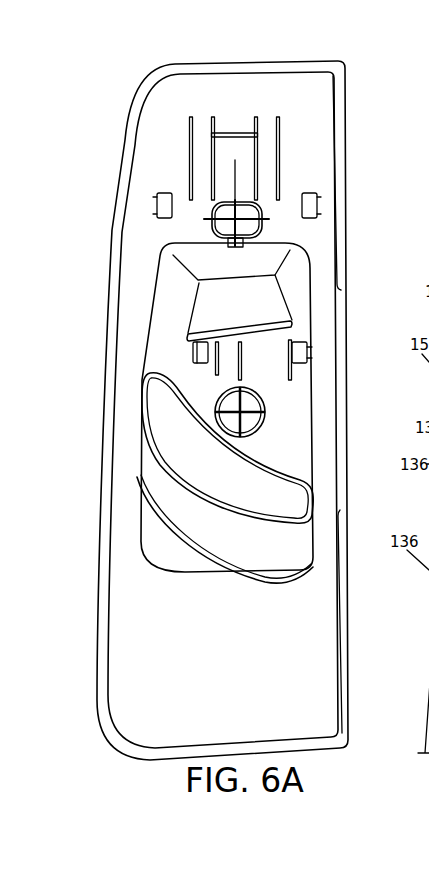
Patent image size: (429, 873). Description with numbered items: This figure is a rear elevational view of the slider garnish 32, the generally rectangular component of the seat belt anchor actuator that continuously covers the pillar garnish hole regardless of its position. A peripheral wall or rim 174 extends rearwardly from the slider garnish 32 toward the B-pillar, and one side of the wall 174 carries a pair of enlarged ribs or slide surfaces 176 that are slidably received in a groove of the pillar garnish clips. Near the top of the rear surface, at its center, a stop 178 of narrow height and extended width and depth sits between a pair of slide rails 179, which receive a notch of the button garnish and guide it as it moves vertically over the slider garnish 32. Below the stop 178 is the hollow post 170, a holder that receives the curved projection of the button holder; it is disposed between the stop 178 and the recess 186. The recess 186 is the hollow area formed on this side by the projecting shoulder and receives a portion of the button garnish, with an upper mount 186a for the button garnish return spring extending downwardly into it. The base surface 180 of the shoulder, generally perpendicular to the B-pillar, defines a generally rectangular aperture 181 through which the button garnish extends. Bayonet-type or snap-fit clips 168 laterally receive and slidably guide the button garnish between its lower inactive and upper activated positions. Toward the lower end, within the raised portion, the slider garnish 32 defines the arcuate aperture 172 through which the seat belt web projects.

The slider garnish 32 is at (160, 129).
The clips 168 is at (156, 205).
The hollow post 170 is at (211, 222).
The arcuate aperture 172 is at (173, 428).
The peripheral wall 174 is at (342, 452).
The slide surfaces 176 is at (340, 107).
The stop 178 is at (232, 133).
The slide rails 179 is at (211, 155).
The base surface 180 is at (283, 318).
The rectangular aperture 181 is at (240, 325).
The recess 186 is at (267, 295).
The upper mount 186a is at (305, 248).